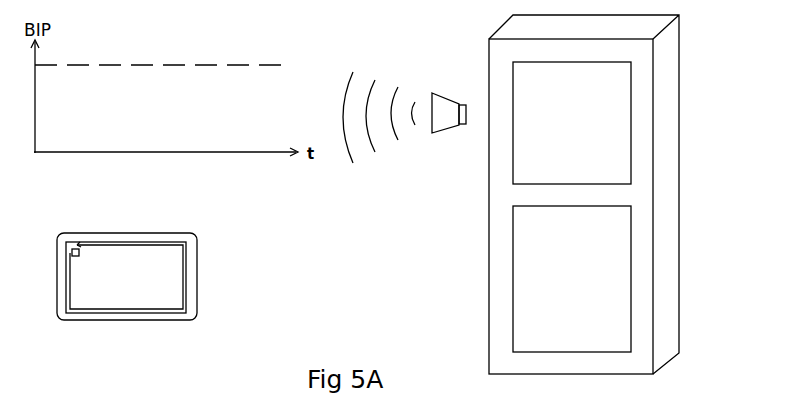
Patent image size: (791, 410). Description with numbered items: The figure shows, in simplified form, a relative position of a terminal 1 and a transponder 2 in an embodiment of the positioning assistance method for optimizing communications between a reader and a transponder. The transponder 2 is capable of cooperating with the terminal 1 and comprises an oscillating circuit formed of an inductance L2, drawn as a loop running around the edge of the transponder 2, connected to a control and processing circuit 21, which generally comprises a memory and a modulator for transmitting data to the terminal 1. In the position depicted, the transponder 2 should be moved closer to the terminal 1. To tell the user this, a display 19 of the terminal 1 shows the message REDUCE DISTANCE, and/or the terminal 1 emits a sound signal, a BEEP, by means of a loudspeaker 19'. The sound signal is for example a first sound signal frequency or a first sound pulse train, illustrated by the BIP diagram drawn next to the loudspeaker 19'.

The terminal 1 is at (610, 194).
The display 19 is at (620, 123).
The loudspeaker 19' is at (404, 130).
The transponder 2 is at (149, 255).
The control and processing circuit 21 is at (80, 256).
The inductance L2 is at (128, 244).